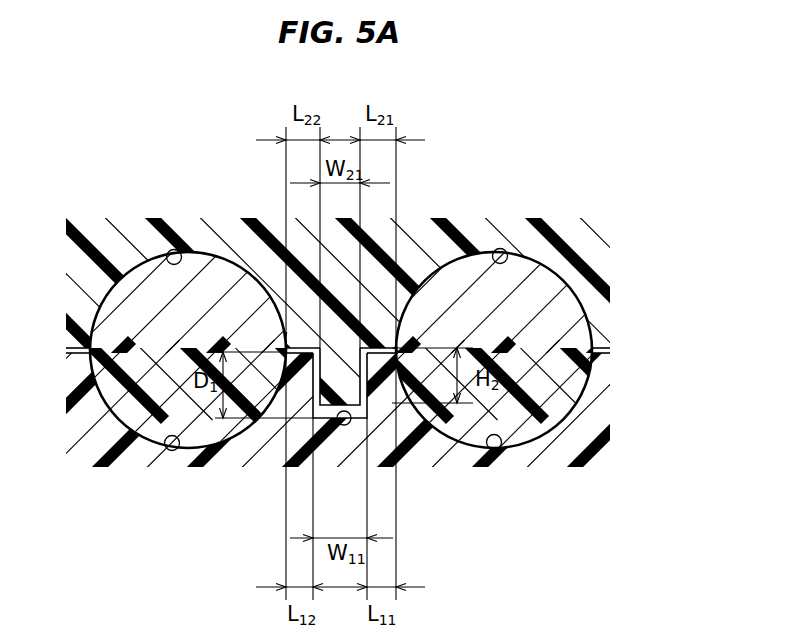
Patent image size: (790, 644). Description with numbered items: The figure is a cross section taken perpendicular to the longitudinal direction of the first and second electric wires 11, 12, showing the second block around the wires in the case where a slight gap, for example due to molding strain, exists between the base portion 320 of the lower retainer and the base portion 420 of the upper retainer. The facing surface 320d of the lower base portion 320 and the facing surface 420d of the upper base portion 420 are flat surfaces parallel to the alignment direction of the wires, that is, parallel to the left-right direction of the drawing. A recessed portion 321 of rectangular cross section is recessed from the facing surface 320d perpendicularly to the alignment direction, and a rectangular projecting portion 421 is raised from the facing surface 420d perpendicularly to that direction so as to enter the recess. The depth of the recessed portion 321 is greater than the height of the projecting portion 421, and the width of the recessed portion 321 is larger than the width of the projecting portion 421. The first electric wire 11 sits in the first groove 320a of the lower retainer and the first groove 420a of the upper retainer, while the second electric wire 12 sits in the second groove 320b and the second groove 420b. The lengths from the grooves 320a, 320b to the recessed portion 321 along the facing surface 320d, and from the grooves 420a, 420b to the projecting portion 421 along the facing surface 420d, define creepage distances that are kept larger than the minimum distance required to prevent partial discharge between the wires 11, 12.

The base portion of the upper retainer 420 is at (578, 240).
The base portion of the lower retainer 320 is at (580, 437).
The projecting portion 421 is at (358, 382).
The recessed portion 321 is at (345, 425).
The first electric wire 11 is at (507, 338).
The second electric wire 12 is at (176, 340).
The first groove 420a is at (503, 249).
The second groove 420b is at (170, 250).
The first groove 320a is at (498, 450).
The second groove 320b is at (168, 450).
The facing surface 420d is at (399, 355).
The facing surface 320d is at (285, 334).